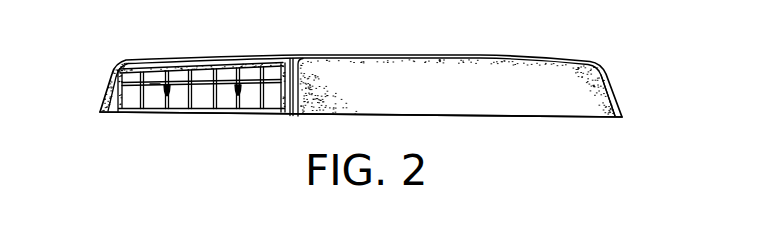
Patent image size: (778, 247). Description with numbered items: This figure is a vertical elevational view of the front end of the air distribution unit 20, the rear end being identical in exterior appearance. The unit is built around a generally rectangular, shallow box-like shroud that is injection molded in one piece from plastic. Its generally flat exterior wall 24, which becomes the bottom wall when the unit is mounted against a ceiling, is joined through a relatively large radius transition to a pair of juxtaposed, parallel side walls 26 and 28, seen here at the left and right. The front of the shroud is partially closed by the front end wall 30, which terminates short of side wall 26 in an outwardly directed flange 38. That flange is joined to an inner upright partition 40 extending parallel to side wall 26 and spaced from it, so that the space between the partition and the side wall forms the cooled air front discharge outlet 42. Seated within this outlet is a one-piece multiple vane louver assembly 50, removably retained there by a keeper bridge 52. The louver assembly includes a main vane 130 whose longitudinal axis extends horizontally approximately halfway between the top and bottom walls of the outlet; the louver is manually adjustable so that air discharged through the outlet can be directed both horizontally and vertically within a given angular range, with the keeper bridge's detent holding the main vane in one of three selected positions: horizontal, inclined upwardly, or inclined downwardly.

The air distribution unit 20 is at (627, 72).
The exterior wall 24 is at (433, 55).
The side wall 26 is at (112, 83).
The side wall 28 is at (615, 93).
The front end wall 30 is at (478, 107).
The outwardly directed flange 38 is at (295, 112).
The inner upright partition 40 is at (283, 114).
The cooled air front discharge outlet 42 is at (178, 98).
The multiple vane louver assembly 50 is at (198, 83).
The keeper bridge 52 is at (187, 104).
The main vane 130 is at (153, 86).